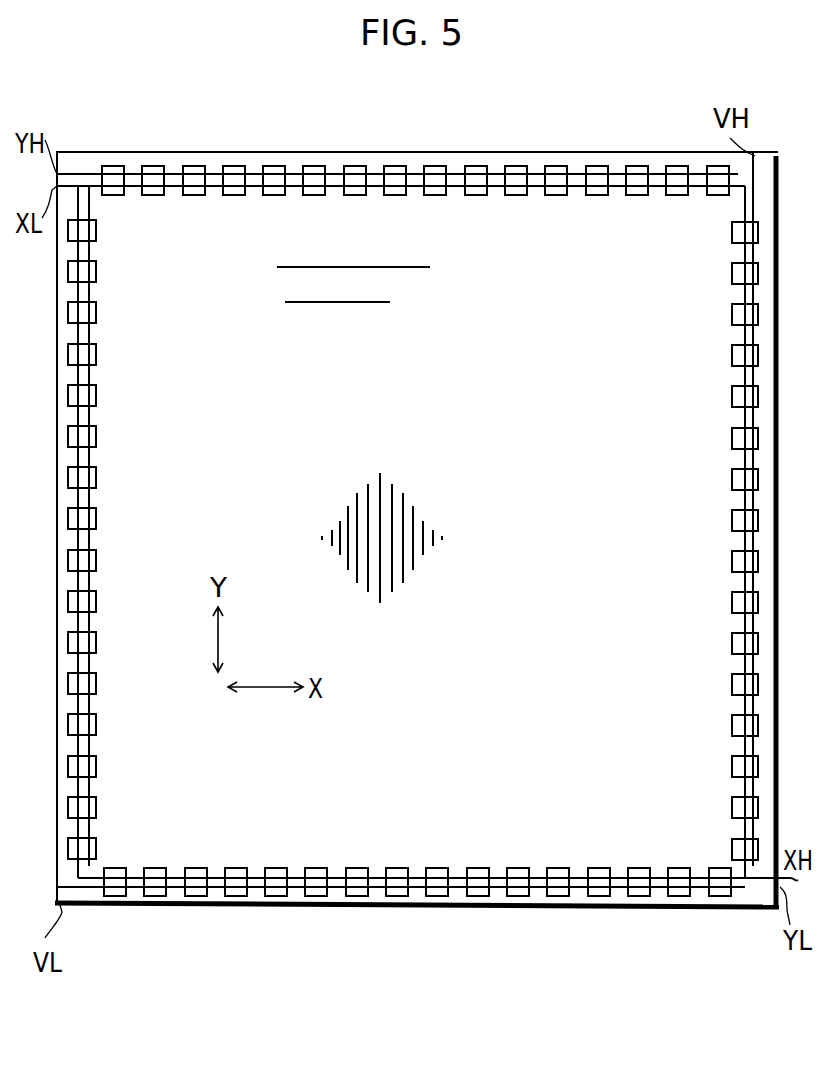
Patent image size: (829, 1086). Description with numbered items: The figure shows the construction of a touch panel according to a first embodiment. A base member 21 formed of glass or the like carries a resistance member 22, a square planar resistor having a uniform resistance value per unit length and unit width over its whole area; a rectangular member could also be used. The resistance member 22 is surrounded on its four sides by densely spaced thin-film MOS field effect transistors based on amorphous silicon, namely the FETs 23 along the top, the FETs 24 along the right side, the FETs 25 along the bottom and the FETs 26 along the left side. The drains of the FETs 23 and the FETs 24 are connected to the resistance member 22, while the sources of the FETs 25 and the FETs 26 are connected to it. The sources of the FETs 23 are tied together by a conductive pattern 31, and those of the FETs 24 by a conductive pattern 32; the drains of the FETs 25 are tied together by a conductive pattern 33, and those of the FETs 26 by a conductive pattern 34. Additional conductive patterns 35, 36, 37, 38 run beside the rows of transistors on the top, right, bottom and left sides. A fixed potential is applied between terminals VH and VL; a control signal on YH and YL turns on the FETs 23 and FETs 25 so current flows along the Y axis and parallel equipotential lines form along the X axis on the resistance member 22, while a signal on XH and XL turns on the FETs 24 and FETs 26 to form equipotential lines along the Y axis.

The base member 21 is at (204, 152).
The resistance member 22 is at (300, 210).
The FETs 23 is at (187, 165).
The FETs 24 is at (759, 311).
The FETs 25 is at (190, 896).
The FETs 26 is at (68, 312).
The conductive pattern 31 is at (378, 174).
The conductive pattern 32 is at (683, 380).
The conductive pattern 33 is at (295, 887).
The conductive pattern 34 is at (72, 413).
The conductive pattern (top, inner) 35 is at (464, 186).
The conductive pattern (right, outer) 36 is at (754, 410).
The conductive pattern (bottom, outer) 37 is at (375, 878).
The conductive pattern (left, inner) 38 is at (76, 493).